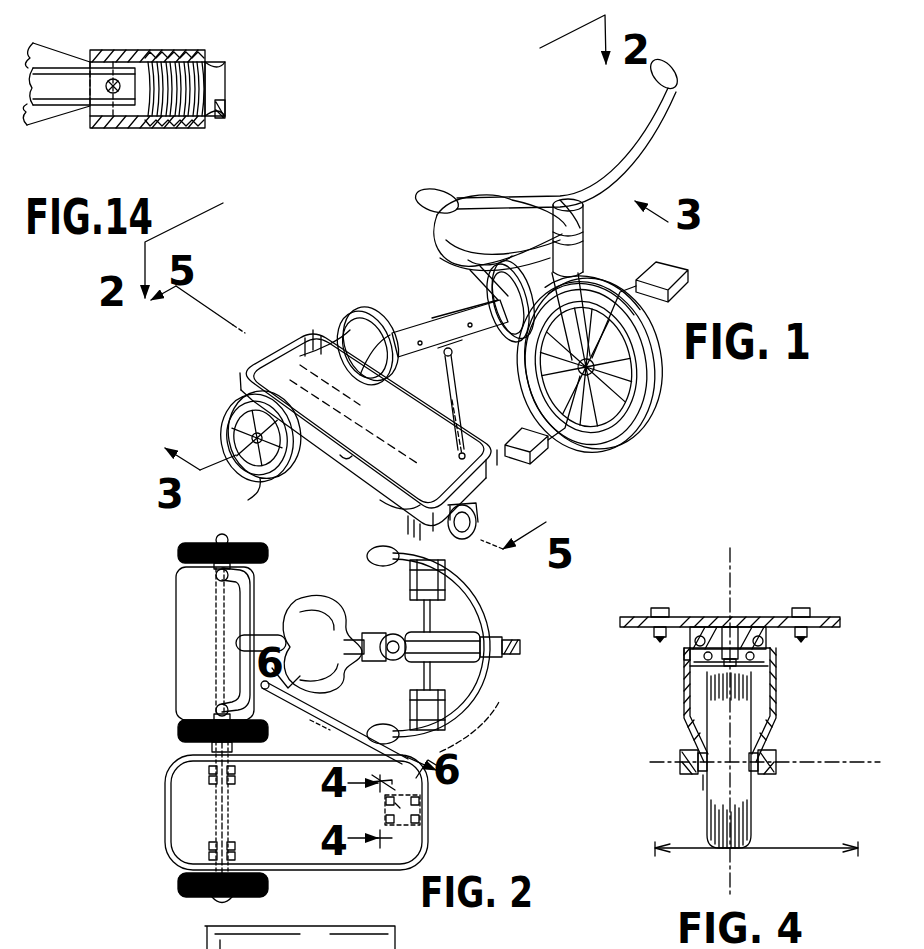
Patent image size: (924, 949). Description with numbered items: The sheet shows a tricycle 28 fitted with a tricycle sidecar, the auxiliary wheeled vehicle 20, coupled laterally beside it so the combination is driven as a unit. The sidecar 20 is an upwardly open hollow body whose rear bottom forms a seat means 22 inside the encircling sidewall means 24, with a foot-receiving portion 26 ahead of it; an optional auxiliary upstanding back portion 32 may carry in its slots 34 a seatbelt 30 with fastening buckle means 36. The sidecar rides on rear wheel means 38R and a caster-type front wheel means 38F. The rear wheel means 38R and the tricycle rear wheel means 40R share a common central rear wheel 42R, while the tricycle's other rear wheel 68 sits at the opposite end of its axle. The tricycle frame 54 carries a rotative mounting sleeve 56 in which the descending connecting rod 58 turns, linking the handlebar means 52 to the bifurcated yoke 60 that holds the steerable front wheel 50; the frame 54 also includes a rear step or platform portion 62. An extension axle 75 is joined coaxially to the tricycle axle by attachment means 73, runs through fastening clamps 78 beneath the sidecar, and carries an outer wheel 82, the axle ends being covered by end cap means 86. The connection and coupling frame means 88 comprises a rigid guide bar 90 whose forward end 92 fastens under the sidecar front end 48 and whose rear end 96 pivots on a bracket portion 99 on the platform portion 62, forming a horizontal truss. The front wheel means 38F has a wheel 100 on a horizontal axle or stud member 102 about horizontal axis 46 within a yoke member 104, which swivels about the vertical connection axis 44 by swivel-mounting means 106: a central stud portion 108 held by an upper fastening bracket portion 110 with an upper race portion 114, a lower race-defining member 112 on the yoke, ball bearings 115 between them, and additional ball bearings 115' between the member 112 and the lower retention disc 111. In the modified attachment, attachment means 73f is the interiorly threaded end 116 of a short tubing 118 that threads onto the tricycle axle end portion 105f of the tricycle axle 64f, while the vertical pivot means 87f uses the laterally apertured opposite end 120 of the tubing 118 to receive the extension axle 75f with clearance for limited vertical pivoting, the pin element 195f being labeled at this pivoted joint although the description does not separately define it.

In FIG. 1, the auxiliary wheeled vehicle 20 is at (320, 492).
In FIG. 2, the auxiliary wheeled vehicle 20 is at (306, 894).
In FIG. 4, the auxiliary wheeled vehicle 20 is at (816, 590).
In FIG. 1, the seat means 22 is at (310, 360).
In FIG. 2, the seat means 22 is at (195, 826).
In FIG. 1, the encircling sidewall means 24 is at (346, 470).
In FIG. 2, the encircling sidewall means 24 is at (308, 778).
In FIG. 1, the foot-receiving portion 26 is at (410, 492).
In FIG. 2, the foot-receiving portion 26 is at (430, 842).
In FIG. 1, the tricycle 28 is at (742, 254).
In FIG. 2, the tricycle 28 is at (514, 682).
In FIG. 2, the seatbelt 30 is at (326, 942).
In FIG. 2, the auxiliary upstanding back portion 32 is at (182, 944).
In FIG. 2, the slots 34 is at (392, 948).
In FIG. 2, the fastening buckle means 36 is at (278, 939).
In FIG. 1, the rear wheel means 38R is at (192, 426).
In FIG. 2, the rear wheel means 38R is at (145, 774).
In FIG. 1, the front wheel means 38F is at (470, 548).
In FIG. 2, the front wheel means 38F is at (428, 810).
In FIG. 4, the front wheel means 38F is at (662, 772).
In FIG. 1, the rear wheel means 40R is at (448, 278).
In FIG. 2, the rear wheel means 40R is at (165, 585).
In FIG. 1, the common central rear wheel 42R is at (372, 358).
In FIG. 2, the common central rear wheel 42R is at (176, 732).
In FIG. 4, the connection axis 44 is at (738, 580).
In FIG. 4, the horizontal axis 46 is at (804, 760).
In FIG. 1, the front end 48 is at (470, 510).
In FIG. 2, the front end 48 is at (440, 790).
In FIG. 4, the front end 48 is at (814, 625).
In FIG. 1, the steerable front wheel 50 is at (664, 420).
In FIG. 2, the steerable front wheel 50 is at (522, 647).
In FIG. 1, the handlebar means 52 is at (686, 104).
In FIG. 2, the handlebar means 52 is at (480, 604).
In FIG. 1, the main structural frame 54 is at (446, 292).
In FIG. 2, the main structural frame 54 is at (347, 580).
In FIG. 1, the rotative mounting sleeve 56 is at (586, 214).
In FIG. 2, the rotative mounting sleeve 56 is at (356, 644).
In FIG. 1, the descending connecting rod 58 is at (570, 196).
In FIG. 2, the descending connecting rod 58 is at (414, 632).
In FIG. 1, the bifurcated yoke 60 is at (600, 256).
In FIG. 2, the bifurcated yoke 60 is at (444, 680).
In FIG. 1, the rear step or platform portion 62 is at (400, 345).
In FIG. 2, the rear step or platform portion 62 is at (178, 688).
In FIG. 14, the tricycle axle 64f is at (212, 66).
In FIG. 1, the rear wheel 68 is at (497, 268).
In FIG. 2, the rear wheel 68 is at (178, 576).
In FIG. 2, the attachment means 73 is at (200, 752).
In FIG. 14, the attachment means 73f is at (208, 30).
In FIG. 2, the extension axle 75 is at (198, 828).
In FIG. 14, the extension axle 75f is at (28, 152).
In FIG. 2, the fastening clamps 78 is at (238, 782).
In FIG. 1, the outer wheel 82 is at (226, 416).
In FIG. 2, the outer wheel 82 is at (178, 886).
In FIG. 1, the end cap means 86 is at (246, 470).
In FIG. 2, the end cap means 86 is at (214, 540).
In FIG. 14, the vertical pivot means 87f is at (131, 47).
In FIG. 1, the connection and coupling frame means 88 is at (456, 386).
In FIG. 2, the connection and coupling frame means 88 is at (306, 714).
In FIG. 1, the guide bar 90 is at (456, 402).
In FIG. 2, the guide bar 90 is at (318, 742).
In FIG. 2, the forward end 92 is at (446, 748).
In FIG. 2, the rear end 96 is at (284, 666).
In FIG. 2, the bracket portion 99 is at (200, 700).
In FIG. 1, the wheel 100 is at (478, 530).
In FIG. 4, the wheel 100 is at (750, 804).
In FIG. 4, the horizontal axle or stud member 102 is at (706, 774).
In FIG. 4, the yoke member 104 is at (770, 722).
In FIG. 14, the tricycle axle end portion 105f is at (176, 112).
In FIG. 4, the swivel-mounting means 106 is at (660, 648).
In FIG. 4, the central stud portion 108 is at (726, 640).
In FIG. 4, the upper fastening bracket portion 110 is at (660, 612).
In FIG. 4, the lower retention disc 111 is at (700, 656).
In FIG. 4, the lower ball bearing race-defining member 112 is at (780, 652).
In FIG. 4, the upper ball bearing race-defining portion 114 is at (700, 636).
In FIG. 4, the ball bearings 115 is at (799, 605).
In FIG. 4, the additional ball bearings 115' is at (786, 669).
In FIG. 14, the interiorly threaded end 116 is at (222, 64).
In FIG. 14, the tubing 118 is at (166, 56).
In FIG. 14, the opposite end 120 is at (92, 60).
In FIG. 14, the tapered member 195f is at (108, 90).